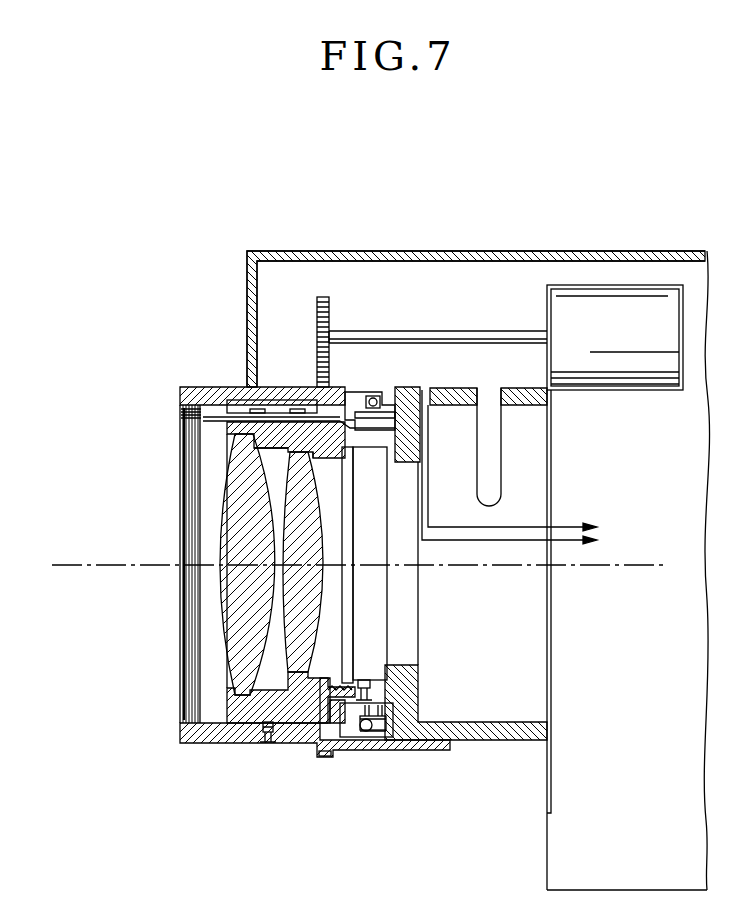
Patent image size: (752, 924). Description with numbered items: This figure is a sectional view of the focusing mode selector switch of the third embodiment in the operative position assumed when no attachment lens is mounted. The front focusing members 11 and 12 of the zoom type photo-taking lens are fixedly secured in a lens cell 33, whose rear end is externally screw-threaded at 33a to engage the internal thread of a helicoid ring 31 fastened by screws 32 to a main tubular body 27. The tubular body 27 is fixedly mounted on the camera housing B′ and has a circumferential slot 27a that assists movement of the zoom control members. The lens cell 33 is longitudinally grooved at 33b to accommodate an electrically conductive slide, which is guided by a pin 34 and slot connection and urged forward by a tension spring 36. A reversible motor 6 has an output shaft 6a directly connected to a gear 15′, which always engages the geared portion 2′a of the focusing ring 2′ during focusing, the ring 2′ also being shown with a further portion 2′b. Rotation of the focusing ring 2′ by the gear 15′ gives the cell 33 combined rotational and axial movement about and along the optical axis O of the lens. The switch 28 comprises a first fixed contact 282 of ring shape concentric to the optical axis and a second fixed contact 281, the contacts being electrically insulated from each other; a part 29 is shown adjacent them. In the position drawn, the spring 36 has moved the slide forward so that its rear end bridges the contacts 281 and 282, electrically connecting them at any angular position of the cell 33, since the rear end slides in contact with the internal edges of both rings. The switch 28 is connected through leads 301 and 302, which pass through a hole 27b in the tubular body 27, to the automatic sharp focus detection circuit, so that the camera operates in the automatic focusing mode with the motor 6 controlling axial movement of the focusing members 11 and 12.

The camera housing B′ is at (606, 250).
The reversible motor 6 is at (622, 347).
The output shaft 6a is at (447, 333).
The gear 15′ is at (330, 326).
The switch 28 is at (550, 777).
The main tubular body 27 is at (497, 738).
The circumferential slot 27a is at (488, 466).
The hole 27b is at (435, 393).
The lead 301 is at (580, 525).
The lead 302 is at (578, 544).
The focusing ring 2′ is at (197, 387).
The geared portion 2′a is at (325, 758).
The barrel bottom flange 2′b is at (186, 718).
The lens cell 33 is at (250, 712).
The external screw thread 33a is at (316, 716).
The longitudinal groove 33b is at (232, 403).
The pin 34 is at (263, 410).
The front focusing member 11 is at (226, 536).
The front focusing member 12 is at (318, 523).
The helicoid ring 31 is at (326, 697).
The screws 32 is at (364, 684).
The contact block 29 is at (357, 738).
The second fixed contact 281 is at (395, 736).
The first fixed contact 282 is at (368, 741).
The tension spring 36 is at (268, 744).
The optical axis O is at (359, 567).